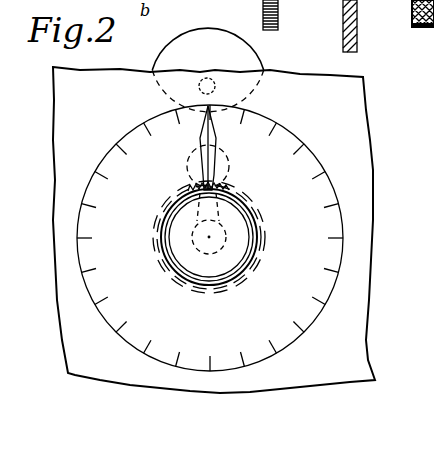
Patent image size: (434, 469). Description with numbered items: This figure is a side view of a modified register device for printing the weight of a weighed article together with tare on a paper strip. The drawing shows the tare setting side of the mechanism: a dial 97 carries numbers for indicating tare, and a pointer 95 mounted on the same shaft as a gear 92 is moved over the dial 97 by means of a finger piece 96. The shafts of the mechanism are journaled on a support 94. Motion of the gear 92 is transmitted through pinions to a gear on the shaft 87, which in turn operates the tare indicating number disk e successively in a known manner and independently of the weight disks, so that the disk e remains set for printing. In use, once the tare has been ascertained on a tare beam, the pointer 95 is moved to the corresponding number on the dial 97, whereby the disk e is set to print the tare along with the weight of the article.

The tare indicating number disk e is at (192, 34).
The shaft 87 is at (204, 63).
The gear 92 is at (278, 14).
The support 94 is at (357, 117).
The pointer 95 is at (216, 134).
The finger piece 96 is at (240, 232).
The dial 97 is at (303, 152).